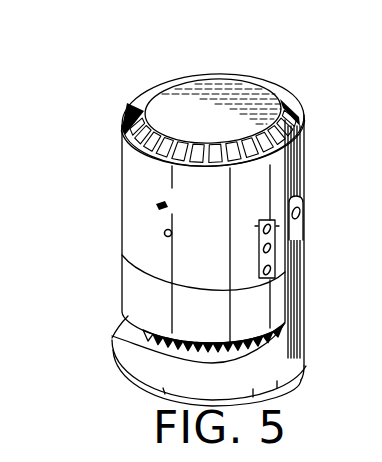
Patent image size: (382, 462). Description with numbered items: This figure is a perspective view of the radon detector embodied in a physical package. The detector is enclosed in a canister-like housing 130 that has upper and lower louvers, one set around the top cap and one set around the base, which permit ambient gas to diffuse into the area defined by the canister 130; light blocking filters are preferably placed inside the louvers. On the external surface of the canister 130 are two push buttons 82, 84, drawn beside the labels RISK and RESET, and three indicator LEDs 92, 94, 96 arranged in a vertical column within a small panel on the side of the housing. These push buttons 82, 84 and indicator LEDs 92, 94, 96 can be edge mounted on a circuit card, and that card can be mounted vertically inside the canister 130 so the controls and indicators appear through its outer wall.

The canister-like housing 130 is at (285, 175).
The push button 82 is at (162, 202).
The push button 84 is at (172, 233).
The indicator LED 92 is at (267, 224).
The indicator LED 94 is at (263, 247).
The indicator LED 96 is at (262, 271).